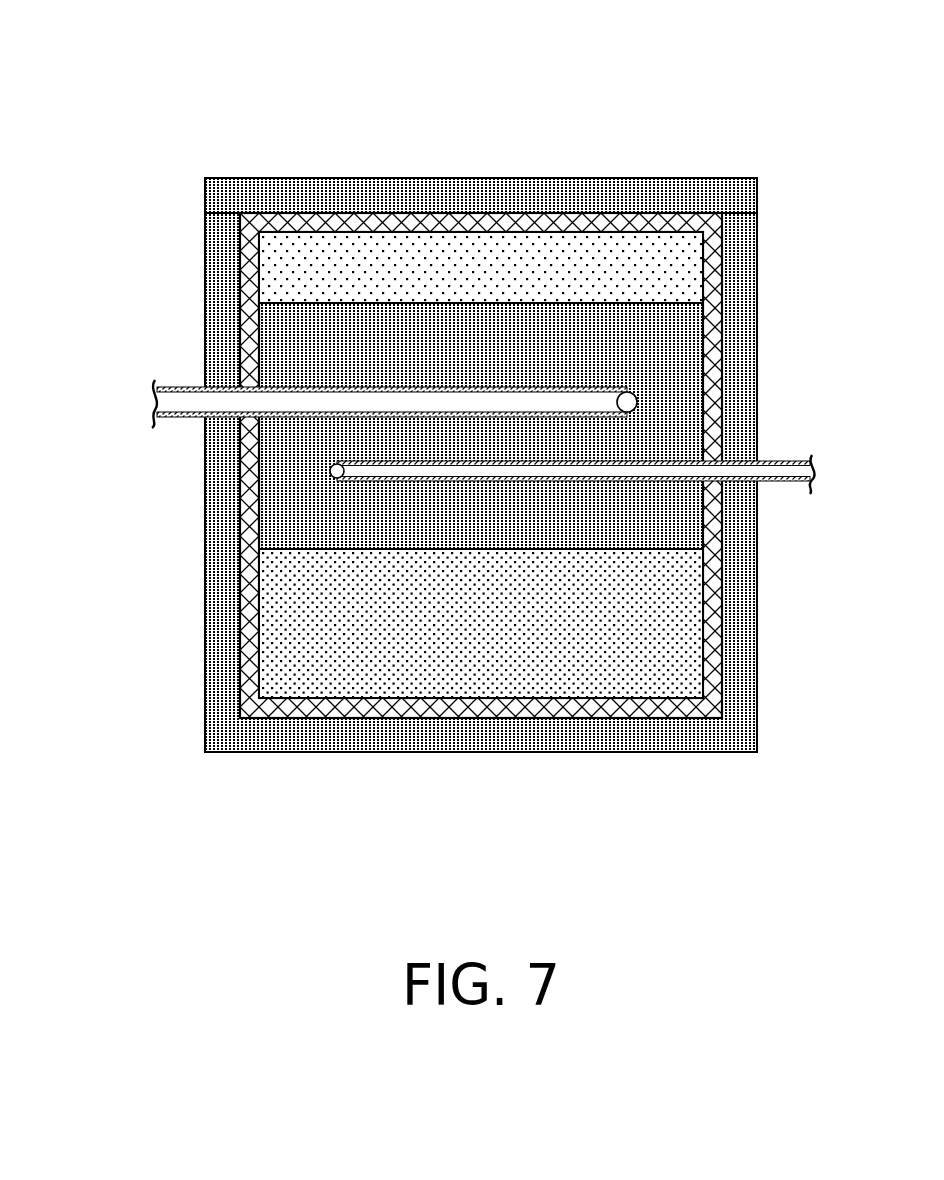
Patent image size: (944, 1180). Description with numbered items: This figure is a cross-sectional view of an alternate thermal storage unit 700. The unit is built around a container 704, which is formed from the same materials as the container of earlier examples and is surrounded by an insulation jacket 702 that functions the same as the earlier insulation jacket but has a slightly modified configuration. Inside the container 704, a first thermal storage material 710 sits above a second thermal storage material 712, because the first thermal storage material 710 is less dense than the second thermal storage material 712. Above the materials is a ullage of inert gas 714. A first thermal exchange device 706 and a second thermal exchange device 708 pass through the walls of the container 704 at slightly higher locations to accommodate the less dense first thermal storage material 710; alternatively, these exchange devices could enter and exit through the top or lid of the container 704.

The thermal storage unit 700 is at (112, 92).
The insulation jacket 702 is at (737, 294).
The container 704 is at (476, 222).
The first thermal exchange device 706 is at (175, 387).
The second thermal exchange device 708 is at (786, 472).
The first thermal storage material 710 is at (668, 427).
The second thermal storage material 712 is at (668, 652).
The ullage of inert gas 714 is at (290, 276).